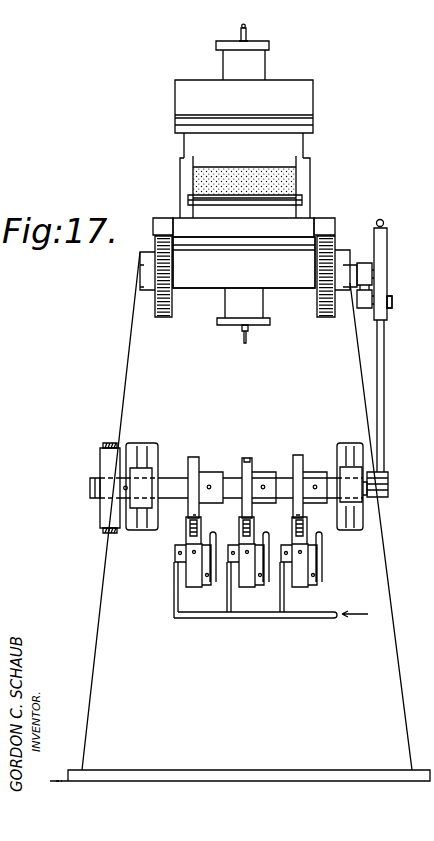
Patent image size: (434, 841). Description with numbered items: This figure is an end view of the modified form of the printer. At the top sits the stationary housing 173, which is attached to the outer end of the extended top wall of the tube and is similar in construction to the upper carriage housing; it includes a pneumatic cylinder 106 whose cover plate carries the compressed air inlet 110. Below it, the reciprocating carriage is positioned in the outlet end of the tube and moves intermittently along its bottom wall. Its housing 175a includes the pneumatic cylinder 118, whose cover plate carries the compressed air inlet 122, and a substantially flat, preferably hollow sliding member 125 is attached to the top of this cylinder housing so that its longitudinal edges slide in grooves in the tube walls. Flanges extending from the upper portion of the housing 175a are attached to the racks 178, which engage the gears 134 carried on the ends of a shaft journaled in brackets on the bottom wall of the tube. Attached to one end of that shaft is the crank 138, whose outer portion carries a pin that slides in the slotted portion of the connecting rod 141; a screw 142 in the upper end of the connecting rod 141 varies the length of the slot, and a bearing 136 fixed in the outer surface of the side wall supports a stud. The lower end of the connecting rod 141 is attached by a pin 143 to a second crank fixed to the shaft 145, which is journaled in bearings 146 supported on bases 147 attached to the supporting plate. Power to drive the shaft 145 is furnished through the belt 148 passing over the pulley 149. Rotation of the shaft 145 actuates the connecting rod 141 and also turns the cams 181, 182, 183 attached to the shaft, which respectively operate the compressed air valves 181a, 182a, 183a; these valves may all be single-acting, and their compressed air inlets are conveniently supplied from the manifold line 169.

The compressed air inlet 110 is at (247, 33).
The pneumatic cylinder 106 is at (255, 62).
The stationary housing 173 is at (207, 67).
The sliding member 125 is at (236, 201).
The racks 178 is at (162, 221).
The gears 134 is at (156, 305).
The pneumatic cylinder 118 is at (252, 305).
The compressed air inlet 122 is at (249, 341).
The housing 175a is at (211, 304).
The screw 142 is at (382, 220).
The connecting rod 141 is at (385, 351).
The crank 138 is at (372, 294).
The bearing 136 is at (393, 302).
The shaft 145 is at (232, 470).
The pulley 149 is at (100, 462).
The belt 148 is at (110, 443).
The bases 147 is at (145, 448).
The bearings 146 is at (137, 510).
The pin 143 is at (389, 478).
The cam 181 is at (192, 459).
The cam 182 is at (250, 460).
The cam 183 is at (300, 458).
The compressed air valve 181a is at (197, 580).
The compressed air valve 182a is at (250, 580).
The compressed air valve 183a is at (302, 580).
The manifold line 169 is at (328, 619).